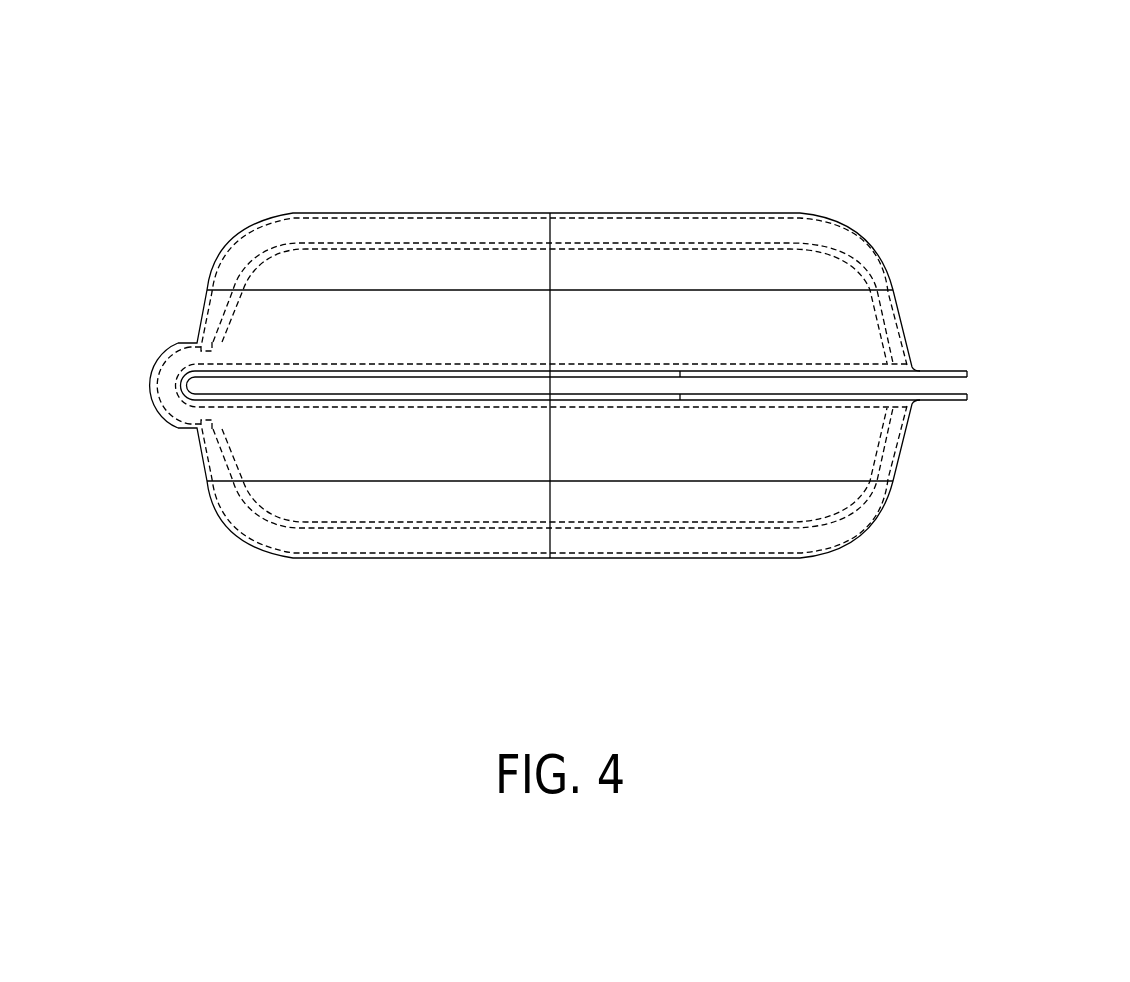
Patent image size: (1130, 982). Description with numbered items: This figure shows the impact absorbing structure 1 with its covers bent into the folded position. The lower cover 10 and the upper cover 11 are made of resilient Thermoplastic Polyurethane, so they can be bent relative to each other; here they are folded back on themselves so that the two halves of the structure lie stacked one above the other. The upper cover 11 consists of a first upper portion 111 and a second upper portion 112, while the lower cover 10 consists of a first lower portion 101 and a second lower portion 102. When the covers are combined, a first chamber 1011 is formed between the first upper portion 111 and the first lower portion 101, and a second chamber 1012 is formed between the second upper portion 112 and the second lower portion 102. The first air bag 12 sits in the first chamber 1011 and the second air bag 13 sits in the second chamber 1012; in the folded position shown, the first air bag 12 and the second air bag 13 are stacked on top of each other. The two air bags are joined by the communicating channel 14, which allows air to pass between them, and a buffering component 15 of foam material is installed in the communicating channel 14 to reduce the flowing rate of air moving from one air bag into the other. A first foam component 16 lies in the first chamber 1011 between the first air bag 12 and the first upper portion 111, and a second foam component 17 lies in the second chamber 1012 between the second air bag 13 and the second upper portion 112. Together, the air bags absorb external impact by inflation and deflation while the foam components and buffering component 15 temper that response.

The impact absorbing structure 1 is at (250, 128).
The lower cover 10 is at (1000, 380).
The first lower portion 101 is at (968, 377).
The second lower portion 102 is at (968, 397).
The first chamber 1011 is at (793, 240).
The second chamber 1012 is at (793, 531).
The upper cover 11 is at (934, 236).
The first upper portion 111 is at (862, 238).
The second upper portion 112 is at (863, 533).
The first air bag 12 is at (591, 248).
The second air bag 13 is at (592, 530).
The communicating channel 14 is at (185, 358).
The buffering component 15 is at (165, 385).
The first foam component 16 is at (712, 218).
The second foam component 17 is at (712, 553).